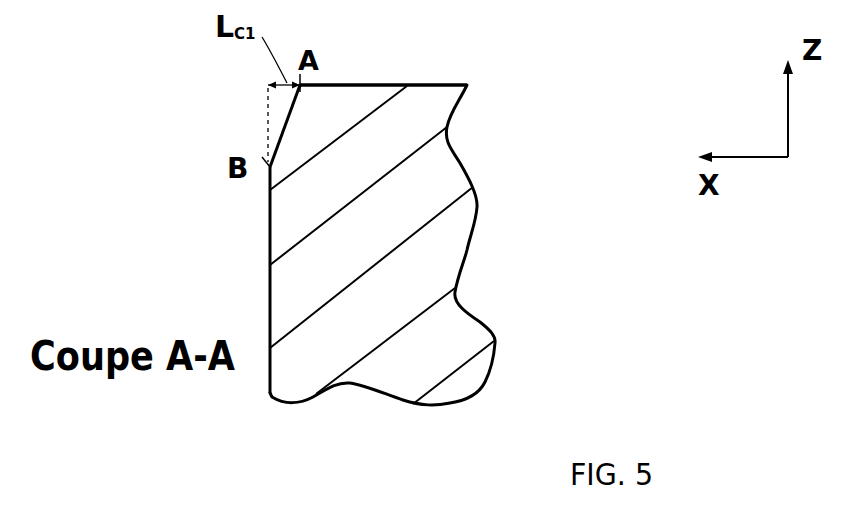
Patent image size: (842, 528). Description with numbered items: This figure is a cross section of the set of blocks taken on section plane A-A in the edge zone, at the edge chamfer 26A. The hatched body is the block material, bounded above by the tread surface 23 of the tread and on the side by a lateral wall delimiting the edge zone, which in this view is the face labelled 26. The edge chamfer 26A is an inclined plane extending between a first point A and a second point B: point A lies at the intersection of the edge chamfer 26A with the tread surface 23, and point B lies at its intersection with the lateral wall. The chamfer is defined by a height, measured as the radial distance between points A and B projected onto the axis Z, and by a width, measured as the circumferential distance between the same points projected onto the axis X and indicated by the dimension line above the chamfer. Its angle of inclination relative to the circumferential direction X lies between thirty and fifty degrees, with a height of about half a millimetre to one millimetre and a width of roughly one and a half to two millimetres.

The tread surface 23 is at (400, 85).
The lateral face 26 is at (270, 272).
The edge chamfer 26A is at (284, 128).